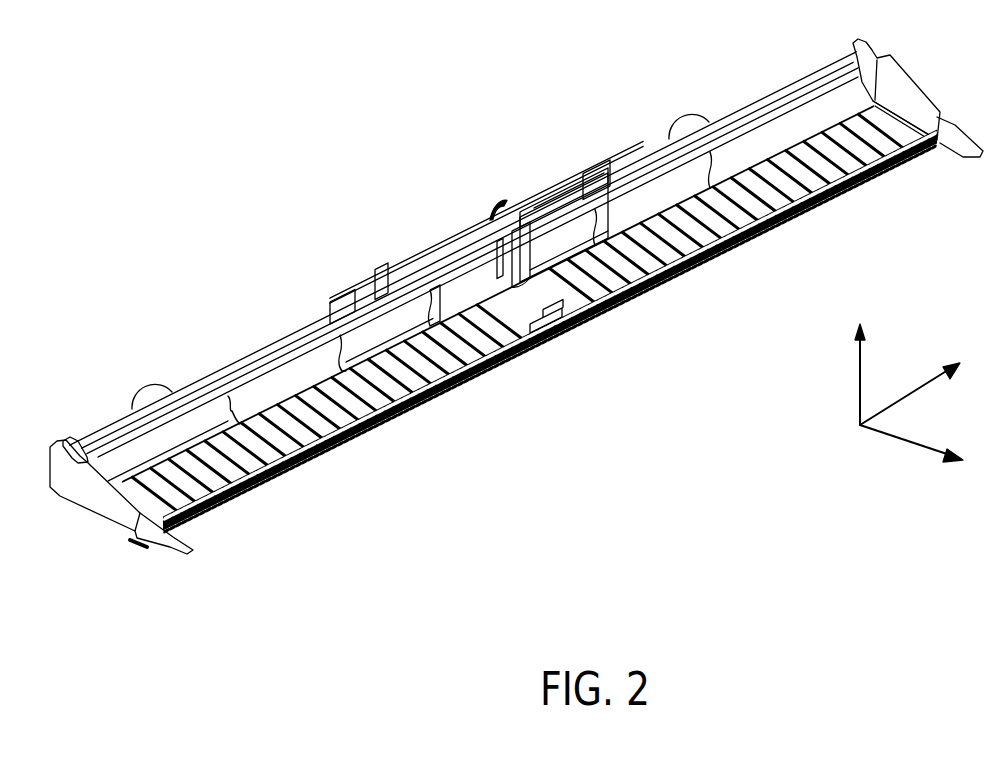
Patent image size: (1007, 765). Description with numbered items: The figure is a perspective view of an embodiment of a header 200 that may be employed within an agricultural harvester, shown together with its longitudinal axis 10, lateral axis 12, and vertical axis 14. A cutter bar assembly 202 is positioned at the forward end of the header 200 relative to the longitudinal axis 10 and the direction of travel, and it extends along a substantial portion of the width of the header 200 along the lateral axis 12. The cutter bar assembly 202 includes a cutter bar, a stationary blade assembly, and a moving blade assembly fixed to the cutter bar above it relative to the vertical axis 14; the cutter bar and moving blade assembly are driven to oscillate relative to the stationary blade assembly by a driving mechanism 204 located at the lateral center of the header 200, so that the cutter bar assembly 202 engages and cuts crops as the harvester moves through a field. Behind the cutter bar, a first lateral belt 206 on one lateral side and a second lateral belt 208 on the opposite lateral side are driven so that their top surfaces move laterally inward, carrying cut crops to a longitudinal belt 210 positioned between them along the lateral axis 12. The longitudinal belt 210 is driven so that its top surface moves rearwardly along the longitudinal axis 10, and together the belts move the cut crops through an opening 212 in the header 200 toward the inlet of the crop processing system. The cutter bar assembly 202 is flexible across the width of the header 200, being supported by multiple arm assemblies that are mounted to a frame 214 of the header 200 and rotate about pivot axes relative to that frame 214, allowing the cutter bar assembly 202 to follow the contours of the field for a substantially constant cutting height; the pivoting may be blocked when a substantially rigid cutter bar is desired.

The header 200 is at (612, 133).
The cutter bar assembly 202 is at (637, 300).
The driving mechanism 204 is at (558, 341).
The first lateral belt 206 is at (278, 442).
The second lateral belt 208 is at (723, 216).
The longitudinal belt 210 is at (507, 290).
The opening 212 is at (437, 283).
The frame 214 is at (241, 358).
The longitudinal axis 10 is at (905, 443).
The lateral axis 12 is at (918, 391).
The vertical axis 14 is at (860, 382).